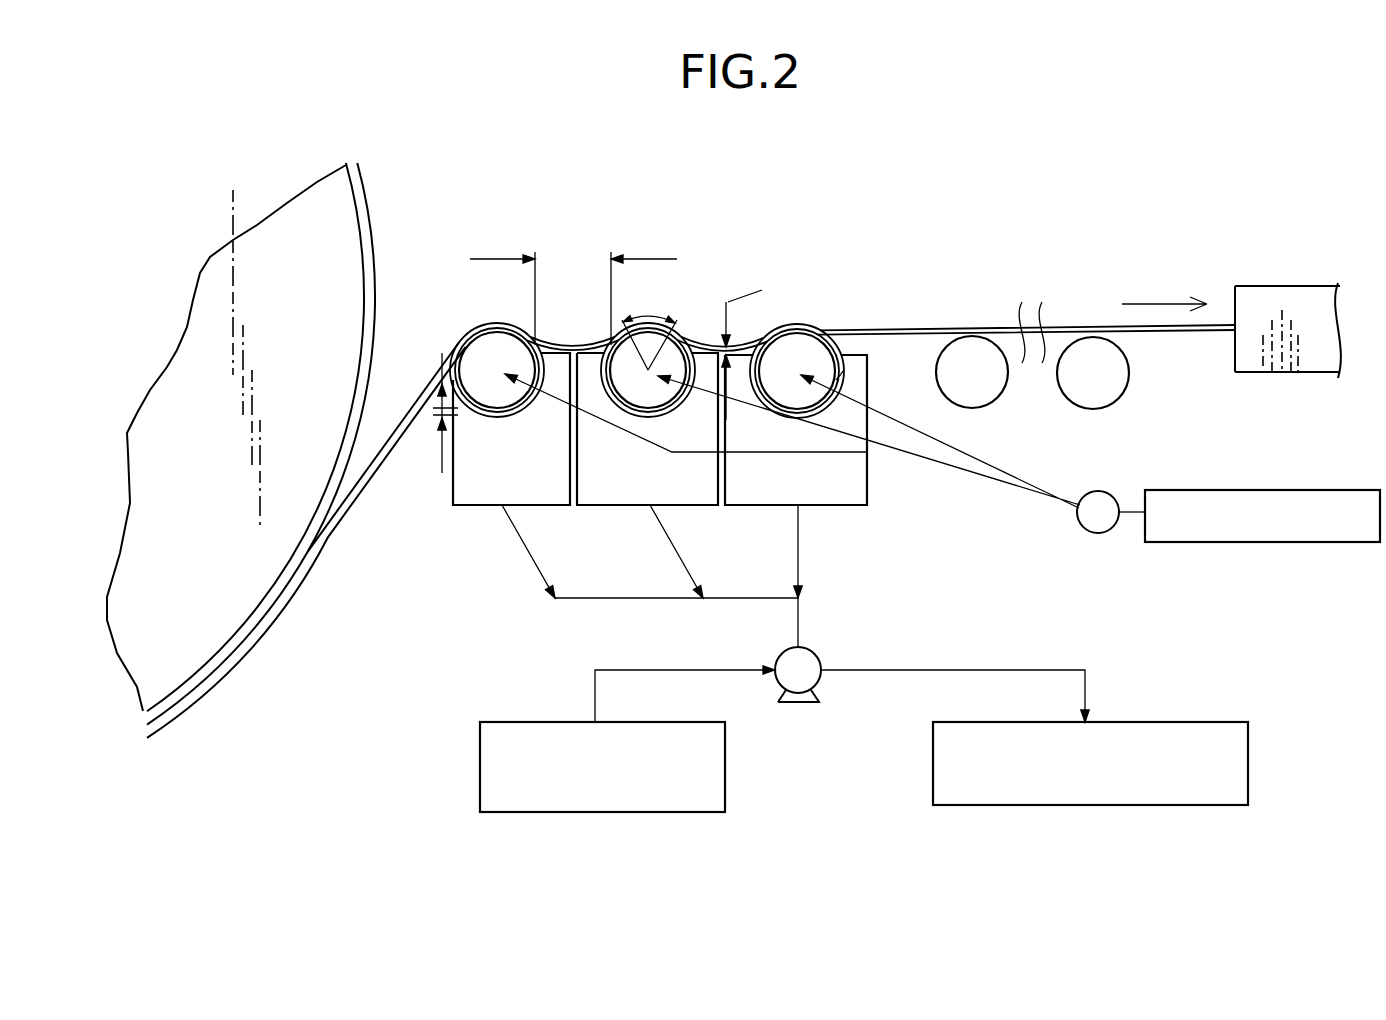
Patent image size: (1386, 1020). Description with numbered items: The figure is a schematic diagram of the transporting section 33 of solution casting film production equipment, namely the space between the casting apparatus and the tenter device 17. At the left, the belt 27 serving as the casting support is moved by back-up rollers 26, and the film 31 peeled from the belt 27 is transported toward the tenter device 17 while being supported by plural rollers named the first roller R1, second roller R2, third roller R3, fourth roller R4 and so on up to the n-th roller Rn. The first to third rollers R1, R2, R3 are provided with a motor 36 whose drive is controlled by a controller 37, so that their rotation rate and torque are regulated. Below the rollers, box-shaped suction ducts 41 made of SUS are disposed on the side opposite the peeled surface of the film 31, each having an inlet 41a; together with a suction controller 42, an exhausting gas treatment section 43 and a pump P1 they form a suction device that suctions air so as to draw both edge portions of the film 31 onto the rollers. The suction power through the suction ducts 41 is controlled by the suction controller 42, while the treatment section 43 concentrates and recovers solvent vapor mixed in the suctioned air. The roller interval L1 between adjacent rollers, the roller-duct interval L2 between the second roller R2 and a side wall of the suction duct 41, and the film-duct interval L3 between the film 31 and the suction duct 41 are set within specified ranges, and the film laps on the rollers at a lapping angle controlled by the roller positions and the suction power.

The tenter device 17 is at (1265, 286).
The back-up rollers 26 is at (267, 250).
The belt 27 is at (358, 207).
The film 31 is at (347, 525).
The transporting section 33 is at (349, 770).
The motor 36 is at (1098, 533).
The controller 37 is at (1333, 490).
The suction duct 41 is at (545, 505).
The inlet of the suction duct 41a is at (837, 375).
The suction controller 42 is at (622, 812).
The exhausting gas treatment section 43 is at (1047, 805).
The first roller R1 is at (482, 357).
The second roller R2 is at (668, 358).
The third roller R3 is at (817, 358).
The fourth roller R4 is at (995, 400).
The n-th roller Rn is at (1118, 402).
The roller interval L1 is at (573, 280).
The roller-duct interval L2 is at (442, 473).
The film-duct interval L3 is at (756, 347).
The pump P1 is at (815, 652).